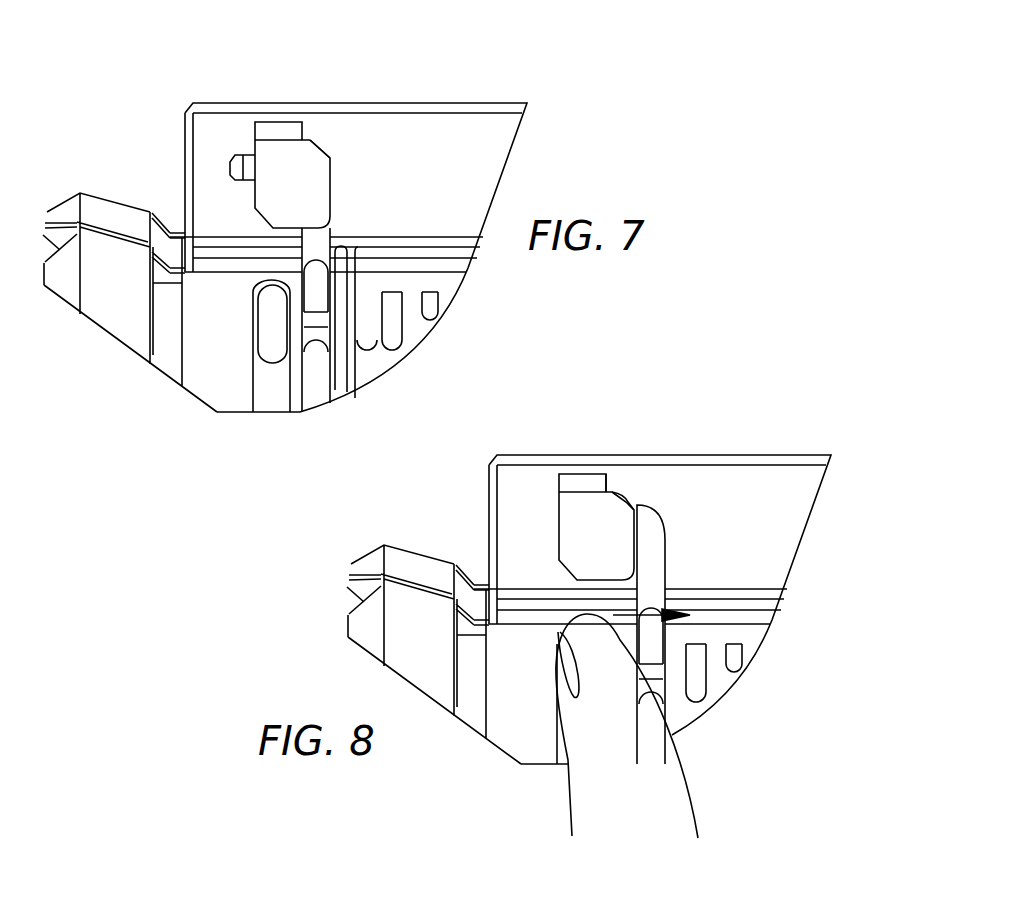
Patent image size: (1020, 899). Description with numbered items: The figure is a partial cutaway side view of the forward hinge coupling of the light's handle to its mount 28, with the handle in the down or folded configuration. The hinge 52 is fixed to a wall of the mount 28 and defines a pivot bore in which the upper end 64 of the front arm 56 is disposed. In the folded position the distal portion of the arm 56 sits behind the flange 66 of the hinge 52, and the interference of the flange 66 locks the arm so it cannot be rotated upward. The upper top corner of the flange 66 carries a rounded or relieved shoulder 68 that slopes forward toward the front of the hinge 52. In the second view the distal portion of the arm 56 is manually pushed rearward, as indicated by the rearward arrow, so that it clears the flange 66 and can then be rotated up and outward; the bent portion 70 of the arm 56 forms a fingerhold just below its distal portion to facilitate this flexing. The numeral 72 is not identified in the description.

In FIG. 7, the mount 28 is at (482, 175).
In FIG. 8, the mount 28 is at (652, 556).
In FIG. 8, the hinge 52 is at (589, 432).
In FIG. 7, the front arm 56 is at (320, 233).
In FIG. 8, the front arm 56 is at (753, 634).
In FIG. 7, the upper end 64 is at (247, 152).
In FIG. 7, the flange 66 is at (313, 187).
In FIG. 8, the flange 66 is at (653, 536).
In FIG. 7, the shoulder 68 is at (325, 152).
In FIG. 8, the shoulder 68 is at (671, 453).
In FIG. 7, the bent portion 70 is at (322, 290).
In FIG. 8, the bent portion 70 is at (721, 664).
In FIG. 7, the shoulder 72 is at (312, 140).
In FIG. 8, the shoulder 72 is at (638, 438).